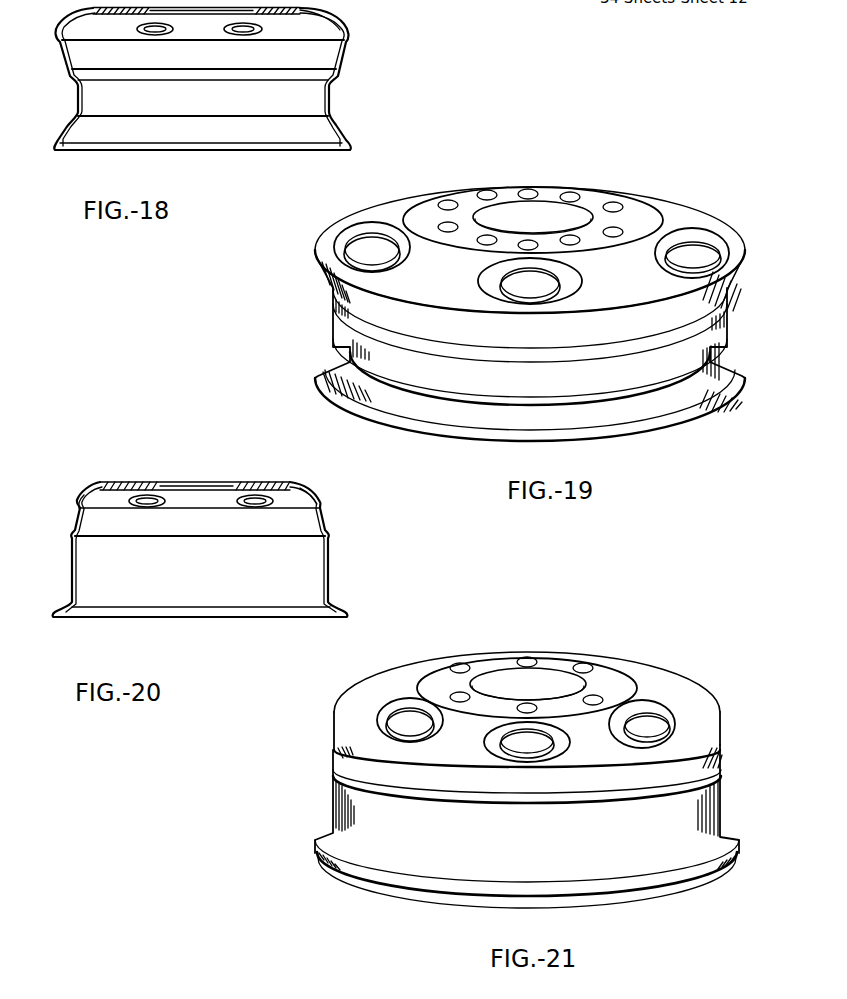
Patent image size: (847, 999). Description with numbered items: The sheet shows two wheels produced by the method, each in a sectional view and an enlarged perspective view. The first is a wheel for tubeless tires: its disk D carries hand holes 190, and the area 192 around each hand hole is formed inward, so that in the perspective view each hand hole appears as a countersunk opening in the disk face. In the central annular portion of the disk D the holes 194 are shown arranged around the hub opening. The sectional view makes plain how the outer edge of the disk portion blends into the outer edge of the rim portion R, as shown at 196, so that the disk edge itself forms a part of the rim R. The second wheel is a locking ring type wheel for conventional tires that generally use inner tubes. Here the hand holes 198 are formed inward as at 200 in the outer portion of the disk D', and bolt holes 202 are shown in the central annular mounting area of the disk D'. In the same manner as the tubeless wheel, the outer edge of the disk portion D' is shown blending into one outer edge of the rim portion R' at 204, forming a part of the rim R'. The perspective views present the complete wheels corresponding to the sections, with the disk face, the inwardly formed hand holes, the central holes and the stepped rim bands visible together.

In FIG. 18, the hand holes 190 is at (88, 28).
In FIG. 19, the hand holes 190 is at (697, 260).
In FIG. 18, the area around the hand hole 192 is at (320, 18).
In FIG. 19, the area around the hand hole 192 is at (688, 232).
In FIG. 18, the holes 194 is at (130, 17).
In FIG. 19, the holes 194 is at (607, 208).
In FIG. 18, the blending location of disk edge into rim edge 196 is at (347, 40).
In FIG. 19, the blending location of disk edge into rim edge 196 is at (317, 262).
In FIG. 18, the disk D is at (196, 38).
In FIG. 19, the disk D is at (528, 204).
In FIG. 18, the rim portion R is at (221, 79).
In FIG. 19, the rim portion R is at (509, 364).
In FIG. 20, the hand holes 198 is at (97, 492).
In FIG. 21, the hand holes 198 is at (403, 725).
In FIG. 20, the inwardly formed area 200 is at (290, 482).
In FIG. 21, the inwardly formed area 200 is at (650, 708).
In FIG. 20, the bolt holes 202 is at (253, 485).
In FIG. 21, the bolt holes 202 is at (587, 665).
In FIG. 20, the blending location of disk edge into rim edge 204 is at (78, 507).
In FIG. 21, the blending location of disk edge into rim edge 204 is at (713, 725).
In FIG. 20, the disk portion D' is at (195, 459).
In FIG. 21, the disk portion D' is at (578, 668).
In FIG. 20, the rim portion R' is at (213, 549).
In FIG. 21, the rim portion R' is at (541, 826).